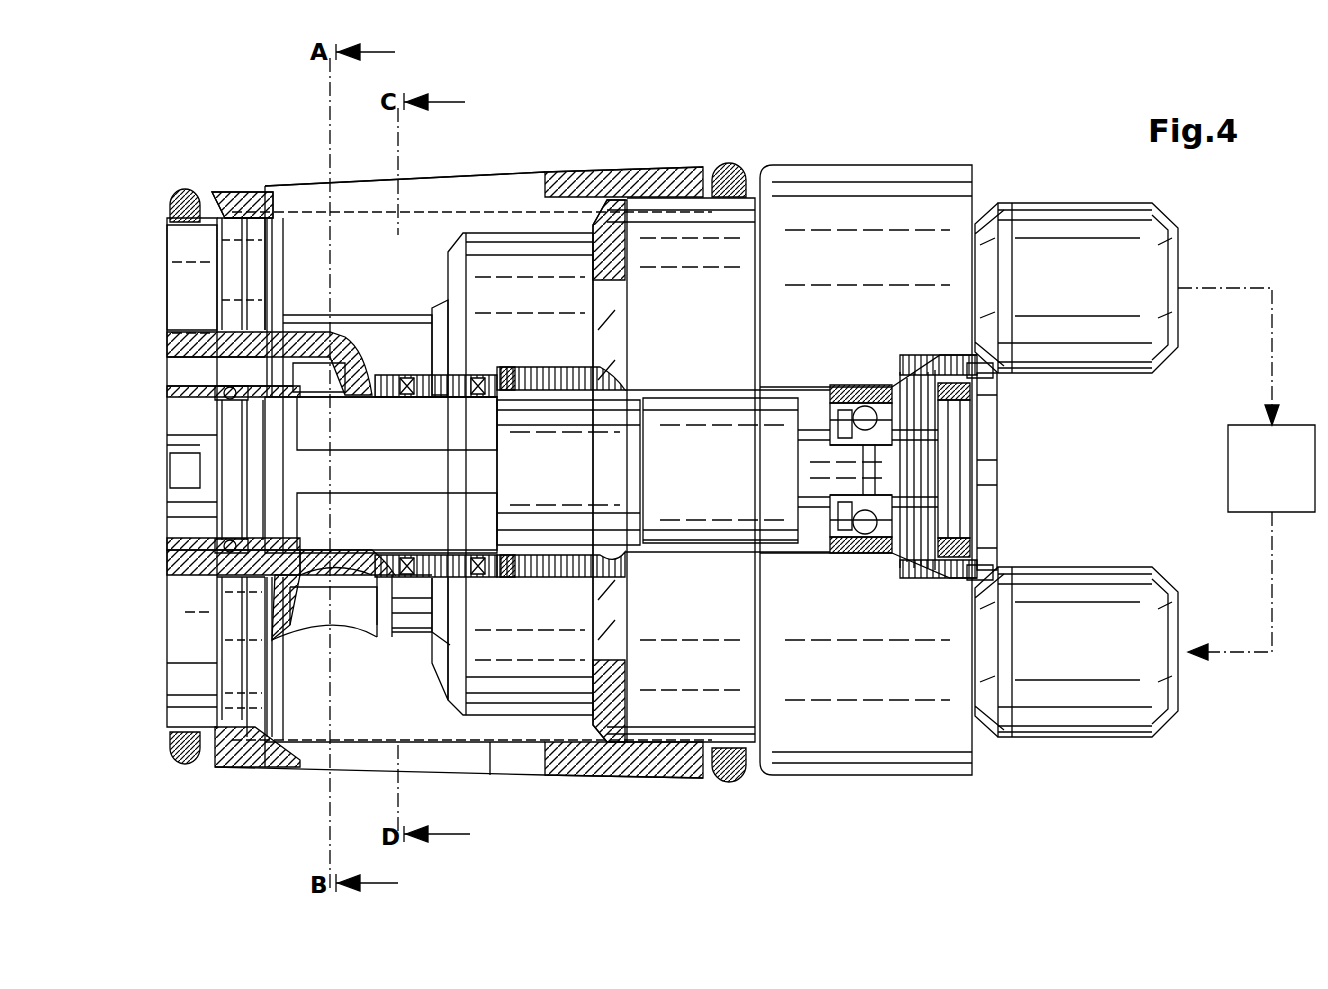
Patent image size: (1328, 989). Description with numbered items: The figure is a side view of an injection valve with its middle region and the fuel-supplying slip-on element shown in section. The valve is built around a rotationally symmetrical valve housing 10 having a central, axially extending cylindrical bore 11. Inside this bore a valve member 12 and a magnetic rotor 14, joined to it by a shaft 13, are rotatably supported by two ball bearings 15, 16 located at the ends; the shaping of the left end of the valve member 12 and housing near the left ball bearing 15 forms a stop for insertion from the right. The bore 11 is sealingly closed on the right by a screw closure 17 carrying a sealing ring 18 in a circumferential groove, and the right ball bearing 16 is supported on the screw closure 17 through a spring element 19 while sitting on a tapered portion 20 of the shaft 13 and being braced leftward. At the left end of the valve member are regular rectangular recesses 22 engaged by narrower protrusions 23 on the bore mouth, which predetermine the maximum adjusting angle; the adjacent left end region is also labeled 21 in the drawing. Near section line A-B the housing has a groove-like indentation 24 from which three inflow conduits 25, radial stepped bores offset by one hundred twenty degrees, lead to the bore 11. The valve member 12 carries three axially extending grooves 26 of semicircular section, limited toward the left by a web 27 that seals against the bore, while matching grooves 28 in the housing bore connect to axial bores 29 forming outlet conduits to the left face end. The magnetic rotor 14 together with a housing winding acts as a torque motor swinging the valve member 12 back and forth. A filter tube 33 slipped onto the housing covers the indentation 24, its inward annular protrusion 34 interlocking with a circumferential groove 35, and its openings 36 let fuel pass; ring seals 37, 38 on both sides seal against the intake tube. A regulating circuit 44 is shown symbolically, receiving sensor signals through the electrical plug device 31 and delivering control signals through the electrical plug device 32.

The valve housing 10 is at (818, 745).
The cylindrical bore 11 is at (580, 398).
The valve member 12 is at (372, 440).
The shaft 13 is at (566, 483).
The magnetic rotor 14 is at (708, 483).
The ball bearing 15 is at (180, 372).
The ball bearing 16 is at (860, 410).
The screw closure 17 is at (940, 452).
The sealing ring 18 is at (970, 386).
The spring element 19 is at (900, 390).
The tapered portion 20 is at (882, 545).
The guide rail 21 is at (180, 505).
The rectangular recesses 22 is at (180, 448).
The protrusions 23 is at (180, 478).
The groove-like indentation 24 is at (305, 280).
The inflow conduits 25 is at (312, 612).
The axially extending grooves 26 is at (456, 415).
The web 27 is at (285, 525).
The grooves 28 is at (322, 385).
The axial bores 29 is at (175, 352).
The electrical plug device 31 is at (1062, 225).
The electrical plug device 32 is at (1053, 715).
The filter tube 33 is at (610, 760).
The annular protrusion 34 is at (235, 222).
The circumferential groove 35 is at (225, 258).
The openings 36 is at (492, 745).
The ring seal 37 is at (170, 745).
The ring seal 38 is at (730, 770).
The regulating circuit 44 is at (1235, 475).